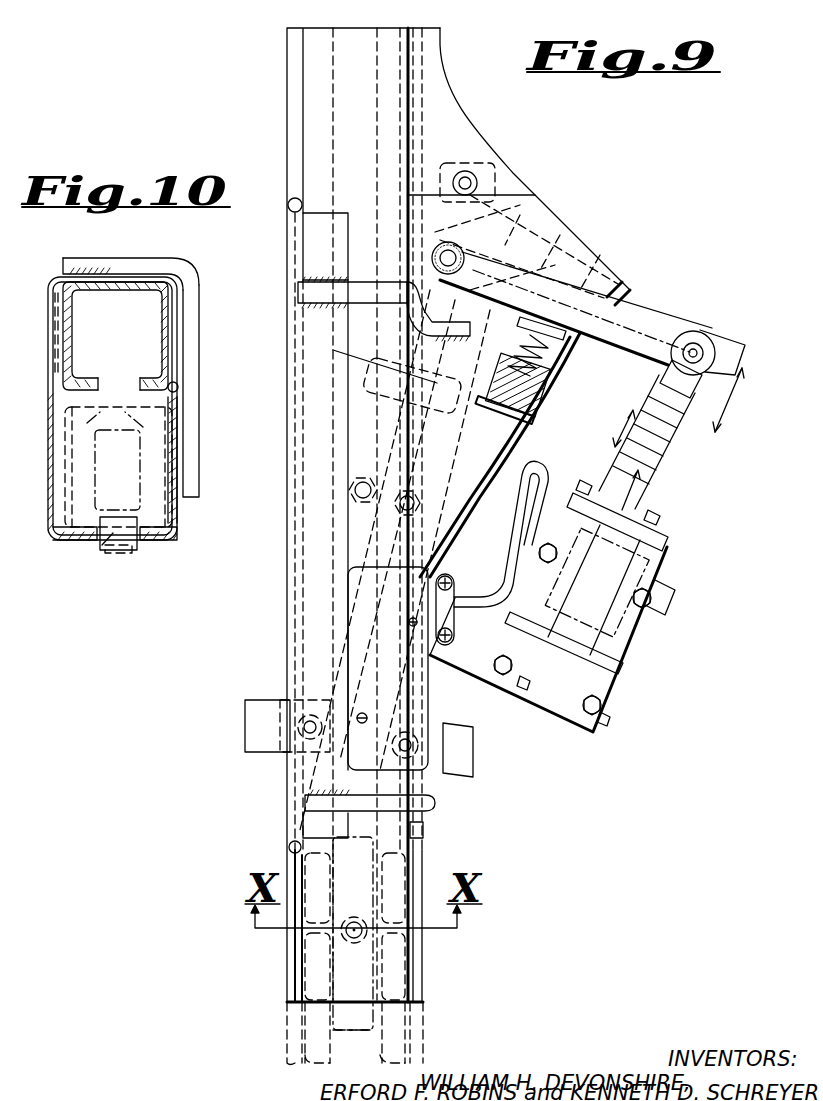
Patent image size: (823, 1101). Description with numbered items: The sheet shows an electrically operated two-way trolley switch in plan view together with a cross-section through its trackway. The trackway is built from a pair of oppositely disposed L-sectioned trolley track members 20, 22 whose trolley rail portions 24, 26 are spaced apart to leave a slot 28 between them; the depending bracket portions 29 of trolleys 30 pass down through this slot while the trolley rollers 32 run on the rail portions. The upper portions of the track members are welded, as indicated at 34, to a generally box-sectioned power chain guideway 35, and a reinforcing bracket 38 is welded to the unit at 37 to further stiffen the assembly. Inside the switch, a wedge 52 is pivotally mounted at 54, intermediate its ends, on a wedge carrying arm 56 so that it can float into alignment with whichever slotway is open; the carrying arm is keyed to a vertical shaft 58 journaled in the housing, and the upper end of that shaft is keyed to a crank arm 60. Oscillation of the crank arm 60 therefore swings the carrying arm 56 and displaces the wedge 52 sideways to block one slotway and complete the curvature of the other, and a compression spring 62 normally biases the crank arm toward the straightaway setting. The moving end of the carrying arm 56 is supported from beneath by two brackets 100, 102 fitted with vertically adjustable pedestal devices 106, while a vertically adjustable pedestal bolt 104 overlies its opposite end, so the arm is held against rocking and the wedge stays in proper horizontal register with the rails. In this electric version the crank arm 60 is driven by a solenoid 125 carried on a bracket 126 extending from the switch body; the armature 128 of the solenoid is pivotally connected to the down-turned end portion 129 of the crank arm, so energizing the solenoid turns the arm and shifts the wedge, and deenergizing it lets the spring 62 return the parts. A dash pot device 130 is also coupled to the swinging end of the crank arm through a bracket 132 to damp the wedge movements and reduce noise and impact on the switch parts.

In FIG. 10, the trolley track member 20 is at (180, 505).
In FIG. 9, the trolley track member 20 is at (423, 955).
In FIG. 10, the trolley track member 22 is at (50, 492).
In FIG. 9, the trolley track member 22 is at (287, 955).
In FIG. 10, the trolley rail portion 24 is at (152, 540).
In FIG. 9, the trolley rail portion 24 is at (412, 1060).
In FIG. 10, the trolley rail portion 26 is at (75, 538).
In FIG. 9, the trolley rail portion 26 is at (318, 1057).
In FIG. 10, the slot 28 is at (125, 538).
In FIG. 9, the slot 28 is at (342, 1058).
In FIG. 10, the depending bracket portion 29 is at (106, 538).
In FIG. 9, the depending bracket portion 29 is at (355, 945).
In FIG. 10, the trolley 30 is at (159, 431).
In FIG. 9, the trolley 30 is at (315, 980).
In FIG. 10, the trolley roller 32 is at (115, 407).
In FIG. 10, the weld 34 is at (180, 383).
In FIG. 9, the weld 34 is at (292, 850).
In FIG. 10, the power chain guideway 35 is at (172, 322).
In FIG. 9, the power chain guideway 35 is at (413, 870).
In FIG. 10, the weld 37 is at (83, 265).
In FIG. 9, the weld 37 is at (303, 822).
In FIG. 10, the reinforcing bracket 38 is at (192, 285).
In FIG. 9, the reinforcing bracket 38 is at (437, 800).
In FIG. 9, the wedge 52 is at (375, 440).
In FIG. 9, the pivotal connection 54 is at (350, 490).
In FIG. 9, the wedge carrying arm 56 is at (320, 565).
In FIG. 9, the vertical shaft 58 is at (447, 250).
In FIG. 9, the crank arm 60 is at (645, 322).
In FIG. 9, the compression spring 62 is at (520, 335).
In FIG. 9, the bracket 100 is at (474, 759).
In FIG. 9, the bracket 102 is at (245, 732).
In FIG. 9, the pedestal bolt 104 is at (463, 168).
In FIG. 9, the pedestal device 106 is at (304, 720).
In FIG. 9, the solenoid 125 is at (670, 612).
In FIG. 9, the bracket 126 is at (628, 643).
In FIG. 9, the armature 128 is at (660, 527).
In FIG. 9, the down-turned end portion 129 is at (708, 338).
In FIG. 9, the dash pot device 130 is at (670, 559).
In FIG. 9, the bracket 132 is at (667, 368).